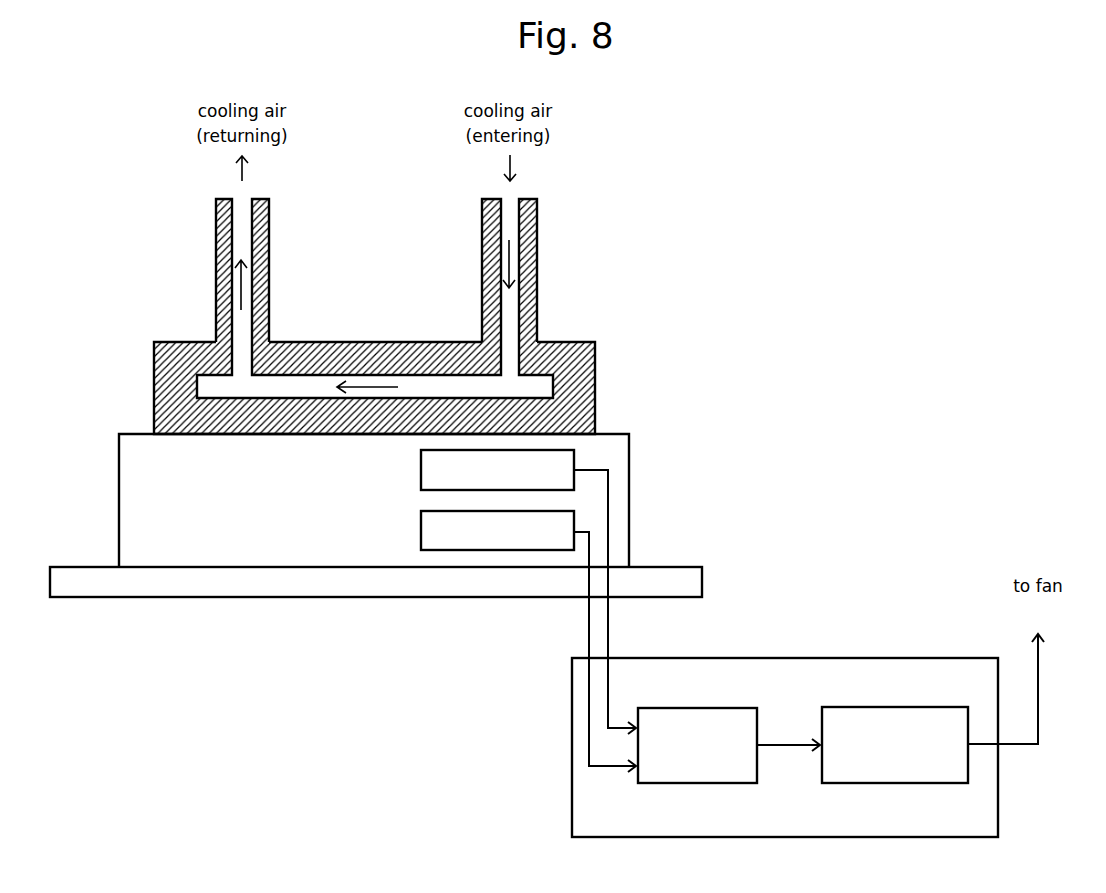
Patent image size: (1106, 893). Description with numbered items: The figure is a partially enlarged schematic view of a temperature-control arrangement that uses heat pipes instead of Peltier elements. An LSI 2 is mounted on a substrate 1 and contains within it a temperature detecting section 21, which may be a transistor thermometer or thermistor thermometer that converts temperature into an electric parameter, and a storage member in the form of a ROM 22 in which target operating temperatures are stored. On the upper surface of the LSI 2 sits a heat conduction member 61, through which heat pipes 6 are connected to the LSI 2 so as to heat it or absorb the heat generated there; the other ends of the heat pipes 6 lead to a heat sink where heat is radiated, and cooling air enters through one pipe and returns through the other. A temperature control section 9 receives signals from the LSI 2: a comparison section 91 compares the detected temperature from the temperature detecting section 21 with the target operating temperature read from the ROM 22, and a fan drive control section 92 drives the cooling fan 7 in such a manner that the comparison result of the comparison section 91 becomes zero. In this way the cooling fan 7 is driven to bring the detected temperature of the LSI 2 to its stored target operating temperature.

The substrate 1 is at (174, 598).
The LSI 2 is at (119, 475).
The heat pipe 6 is at (537, 248).
The heat conduction member 61 is at (597, 365).
The cooling fan 7 is at (1006, 672).
The temperature control section 9 is at (833, 658).
The temperature detecting section 21 is at (421, 472).
The ROM 22 is at (421, 522).
The comparison section 91 is at (725, 708).
The fan drive control section 92 is at (907, 707).